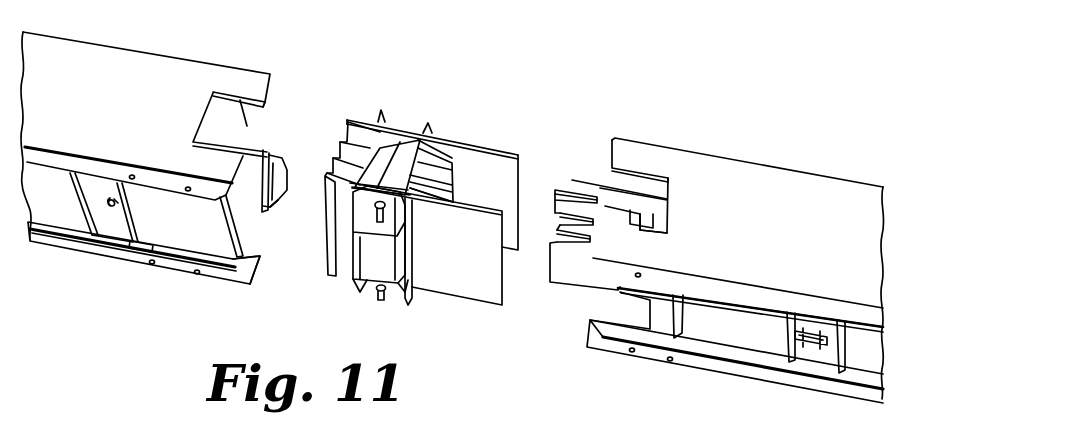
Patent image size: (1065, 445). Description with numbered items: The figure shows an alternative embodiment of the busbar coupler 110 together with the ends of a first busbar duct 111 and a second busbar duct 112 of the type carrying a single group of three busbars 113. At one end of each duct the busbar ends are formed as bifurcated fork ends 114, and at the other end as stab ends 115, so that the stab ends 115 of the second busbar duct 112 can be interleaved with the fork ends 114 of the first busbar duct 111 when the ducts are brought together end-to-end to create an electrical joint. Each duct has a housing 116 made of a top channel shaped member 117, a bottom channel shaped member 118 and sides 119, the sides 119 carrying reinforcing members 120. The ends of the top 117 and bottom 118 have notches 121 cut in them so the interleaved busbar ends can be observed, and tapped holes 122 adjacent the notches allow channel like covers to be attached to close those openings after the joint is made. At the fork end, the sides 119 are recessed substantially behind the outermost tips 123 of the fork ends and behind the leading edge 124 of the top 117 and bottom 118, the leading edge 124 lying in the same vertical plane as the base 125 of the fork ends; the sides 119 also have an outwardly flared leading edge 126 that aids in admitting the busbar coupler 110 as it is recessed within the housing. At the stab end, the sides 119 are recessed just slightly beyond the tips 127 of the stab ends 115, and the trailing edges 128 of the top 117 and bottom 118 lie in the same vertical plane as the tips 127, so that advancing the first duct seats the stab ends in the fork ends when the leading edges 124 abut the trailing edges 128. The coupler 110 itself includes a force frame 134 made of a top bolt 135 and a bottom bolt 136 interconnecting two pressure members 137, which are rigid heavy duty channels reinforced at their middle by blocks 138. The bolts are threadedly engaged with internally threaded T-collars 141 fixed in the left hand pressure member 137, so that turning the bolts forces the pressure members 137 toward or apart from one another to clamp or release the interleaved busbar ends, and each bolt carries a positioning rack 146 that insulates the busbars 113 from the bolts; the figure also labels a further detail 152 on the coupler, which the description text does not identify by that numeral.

The busbar coupler 110 is at (453, 132).
The first busbar duct 111 is at (710, 169).
The second busbar duct 112 is at (219, 71).
The busbars 113 is at (271, 207).
The fork ends 114 is at (602, 181).
The stab ends 115 is at (276, 126).
The housing 116 is at (150, 66).
The top channel shaped member 117 is at (80, 54).
The bottom channel shaped member 118 is at (177, 275).
The sides 119 is at (130, 247).
The reinforcing members 120 is at (133, 247).
The notches 121 is at (235, 93).
The tapped holes 122 is at (132, 177).
The outermost tips of the fork ends 123 is at (583, 155).
The leading edge 124 is at (590, 318).
The base of the fork ends 125 is at (607, 200).
The outwardly flared leading edge 126 is at (247, 117).
The tips of the stab ends 127 is at (284, 123).
The trailing edges 128 is at (272, 286).
The force frame 134 is at (392, 136).
The top bolt 135 is at (387, 213).
The bottom bolt 136 is at (388, 300).
The pressure members 137 is at (427, 130).
The blocks 138 is at (372, 265).
The T-collars 141 is at (373, 292).
The positioning rack 146 is at (432, 157).
The step face 152 is at (448, 176).